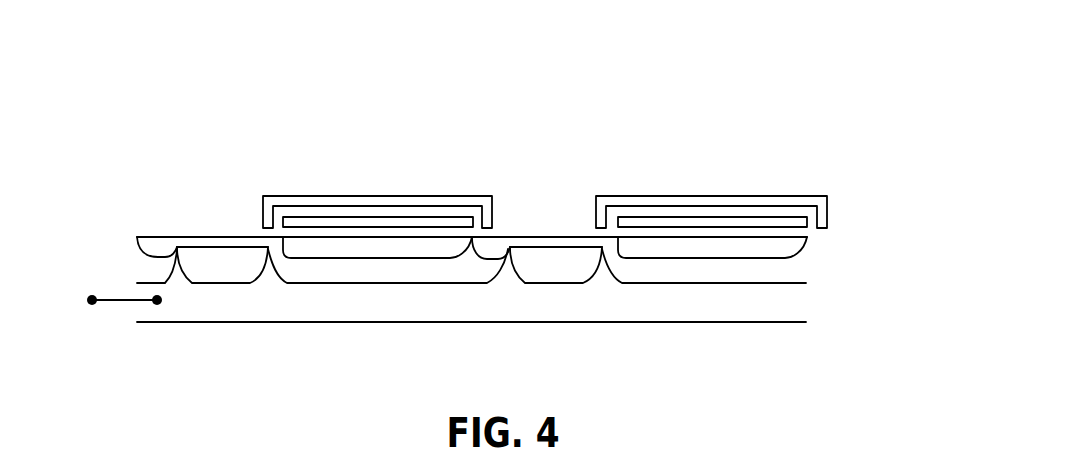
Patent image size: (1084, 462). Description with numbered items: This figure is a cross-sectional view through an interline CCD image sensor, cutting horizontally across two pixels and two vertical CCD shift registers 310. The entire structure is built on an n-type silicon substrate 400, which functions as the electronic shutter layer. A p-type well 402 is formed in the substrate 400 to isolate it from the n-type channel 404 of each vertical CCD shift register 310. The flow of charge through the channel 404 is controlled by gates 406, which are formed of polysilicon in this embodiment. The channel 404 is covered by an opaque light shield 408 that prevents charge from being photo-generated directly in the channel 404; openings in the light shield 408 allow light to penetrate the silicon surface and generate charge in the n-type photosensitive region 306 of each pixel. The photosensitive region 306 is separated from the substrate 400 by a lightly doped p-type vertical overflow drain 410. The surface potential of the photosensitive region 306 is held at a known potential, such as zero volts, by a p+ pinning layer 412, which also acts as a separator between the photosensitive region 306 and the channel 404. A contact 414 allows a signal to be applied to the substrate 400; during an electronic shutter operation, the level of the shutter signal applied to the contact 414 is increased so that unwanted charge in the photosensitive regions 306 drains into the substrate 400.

The photosensitive region 306 is at (223, 267).
The vertical CCD shift register 310 is at (395, 156).
The substrate 400 is at (797, 300).
The p-type well 402 is at (776, 268).
The channel 404 is at (420, 252).
The gates 406 is at (343, 222).
The light shield 408 is at (267, 196).
The vertical overflow drain 410 is at (223, 285).
The pinning layer 412 is at (158, 237).
The contact 414 is at (125, 298).